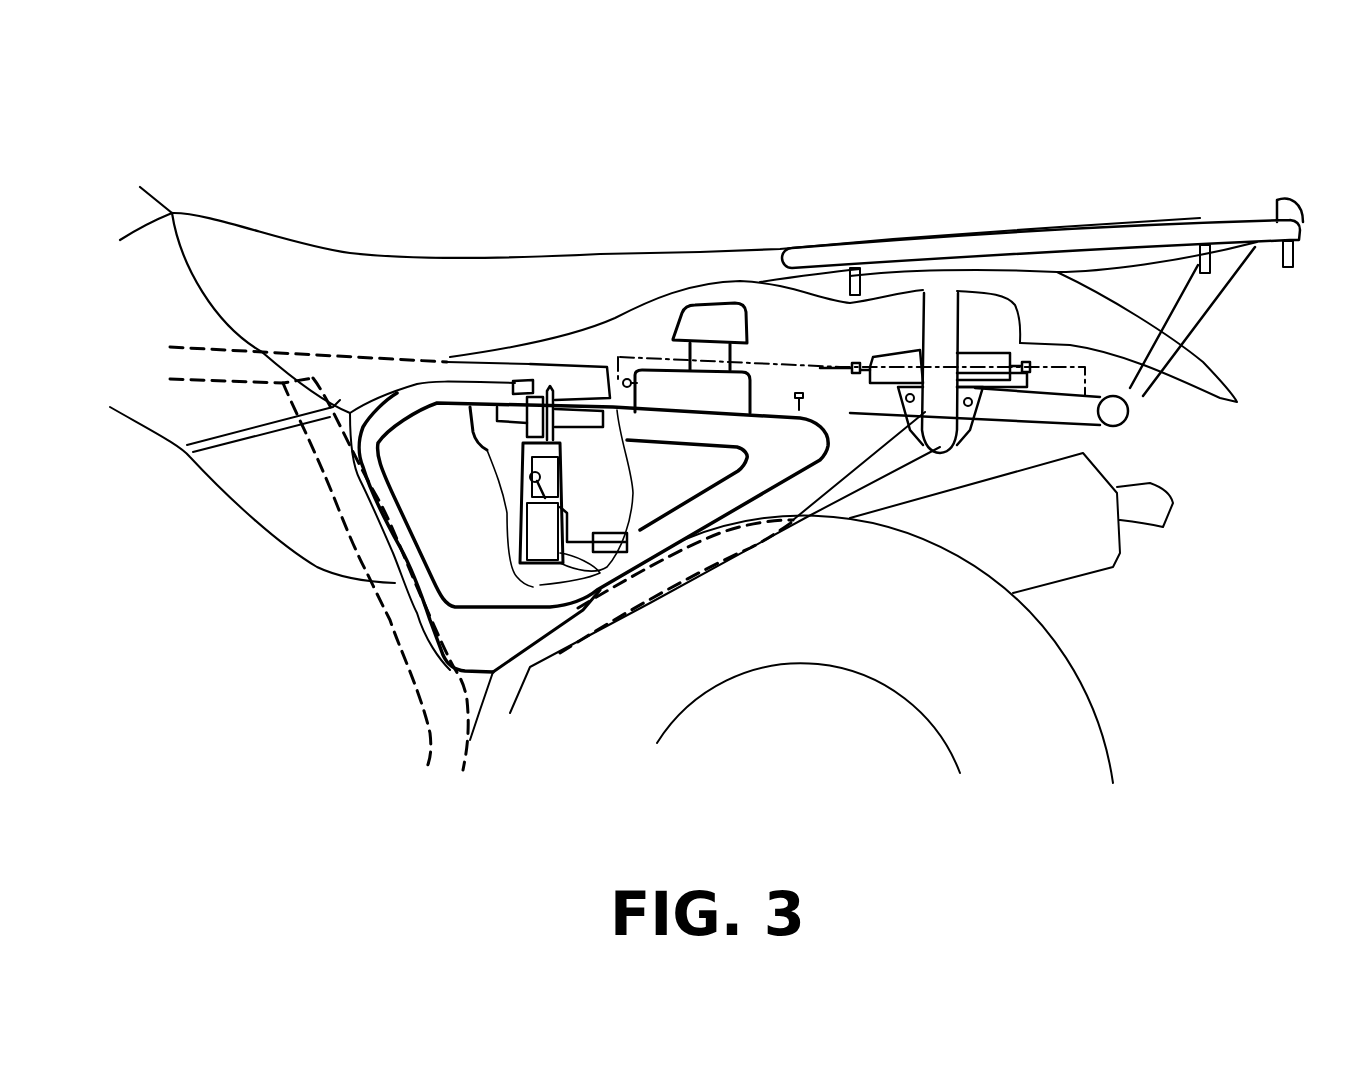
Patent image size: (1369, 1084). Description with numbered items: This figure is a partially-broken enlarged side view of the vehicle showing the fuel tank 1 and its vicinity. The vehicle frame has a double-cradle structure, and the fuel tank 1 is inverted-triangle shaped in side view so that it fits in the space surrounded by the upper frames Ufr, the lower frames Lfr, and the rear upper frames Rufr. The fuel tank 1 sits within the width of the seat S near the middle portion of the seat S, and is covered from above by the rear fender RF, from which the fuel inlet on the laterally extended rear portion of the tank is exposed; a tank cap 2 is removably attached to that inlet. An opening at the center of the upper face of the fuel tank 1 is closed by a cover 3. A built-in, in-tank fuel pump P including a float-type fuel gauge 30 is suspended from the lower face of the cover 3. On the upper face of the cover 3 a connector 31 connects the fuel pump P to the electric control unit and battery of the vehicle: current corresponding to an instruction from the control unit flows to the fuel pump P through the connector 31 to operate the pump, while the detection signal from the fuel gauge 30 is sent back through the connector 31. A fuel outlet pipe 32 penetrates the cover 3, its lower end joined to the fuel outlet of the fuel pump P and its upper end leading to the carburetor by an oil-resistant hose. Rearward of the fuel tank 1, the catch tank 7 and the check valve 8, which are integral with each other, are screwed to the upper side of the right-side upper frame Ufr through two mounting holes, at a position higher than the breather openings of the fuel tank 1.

The fuel tank 1 is at (507, 590).
The tank cap 2 is at (715, 310).
The cover 3 is at (580, 415).
The catch tank 7 is at (887, 350).
The check valve 8 is at (988, 353).
The fuel gauge 30 is at (522, 499).
The connector 31 is at (517, 381).
The fuel outlet pipe 32 is at (547, 387).
The seat S is at (543, 267).
The fuel pump P is at (540, 553).
The rear fender RF is at (1203, 366).
The upper frame Ufr is at (383, 366).
The lower frame Lfr is at (395, 640).
The rear upper frame Rufr is at (690, 567).